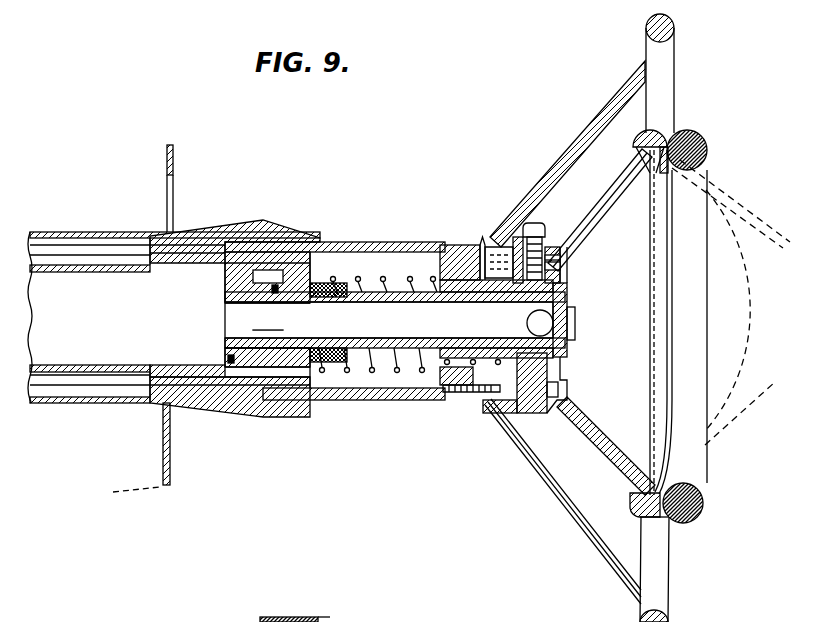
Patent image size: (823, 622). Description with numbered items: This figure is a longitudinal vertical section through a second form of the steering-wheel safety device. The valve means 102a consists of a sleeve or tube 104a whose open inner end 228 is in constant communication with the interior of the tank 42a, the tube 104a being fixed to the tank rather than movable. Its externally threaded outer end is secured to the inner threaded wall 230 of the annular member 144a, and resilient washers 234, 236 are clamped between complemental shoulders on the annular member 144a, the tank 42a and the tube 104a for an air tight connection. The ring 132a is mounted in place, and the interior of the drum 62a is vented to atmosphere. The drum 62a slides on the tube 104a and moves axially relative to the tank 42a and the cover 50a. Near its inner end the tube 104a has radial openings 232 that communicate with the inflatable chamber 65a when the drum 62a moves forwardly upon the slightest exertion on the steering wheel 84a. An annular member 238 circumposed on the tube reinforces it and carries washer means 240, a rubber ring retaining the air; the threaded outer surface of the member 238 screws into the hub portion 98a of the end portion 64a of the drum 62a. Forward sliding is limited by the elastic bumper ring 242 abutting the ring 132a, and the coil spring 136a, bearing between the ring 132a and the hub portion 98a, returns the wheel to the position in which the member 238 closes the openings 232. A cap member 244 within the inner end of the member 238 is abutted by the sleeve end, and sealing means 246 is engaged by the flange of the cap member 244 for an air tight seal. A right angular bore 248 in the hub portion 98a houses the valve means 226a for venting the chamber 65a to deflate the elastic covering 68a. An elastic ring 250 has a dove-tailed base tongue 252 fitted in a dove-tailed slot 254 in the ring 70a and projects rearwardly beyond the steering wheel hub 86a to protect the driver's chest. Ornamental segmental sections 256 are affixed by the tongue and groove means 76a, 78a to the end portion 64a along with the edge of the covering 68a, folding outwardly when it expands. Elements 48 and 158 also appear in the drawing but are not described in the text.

The tank 42a is at (163, 267).
The open inner end 228 is at (237, 263).
The cover 50a is at (220, 414).
The drum 62a is at (384, 390).
The washer means 240 is at (445, 301).
The resilient washer 234 is at (273, 325).
The annular member 238 is at (389, 320).
The radial openings 232 is at (553, 323).
The cap member 244 is at (575, 336).
The annular member 144a is at (262, 268).
The ring 132a is at (318, 268).
The sleeve or tube 104a is at (347, 283).
The valve means 102a is at (370, 287).
The elastic bumper ring 242 is at (330, 366).
The inner threaded wall 230 is at (226, 349).
The resilient washer 236 is at (229, 361).
The coil spring 136a is at (432, 247).
The valve means 226a is at (547, 230).
The right angular bore 248 is at (565, 260).
The sealing means 246 is at (558, 280).
The end portion 64a is at (610, 198).
The hub portion 98a is at (562, 270).
The steering wheel 84a is at (676, 78).
The steering wheel hub 86a is at (670, 51).
The dove-tailed slot 254 is at (670, 130).
The dove-tailed base tongue 252 is at (674, 140).
The elastic ring 250 is at (706, 138).
The elastic covering 68a is at (650, 307).
The ornamental segmental sections 256 is at (672, 363).
The inflatable chamber 65a is at (633, 360).
The groove of tongue and groove means 78a is at (690, 481).
The tongue of tongue and groove means 76a is at (632, 500).
The ring 70a is at (660, 523).
The base 48 is at (282, 617).
The pad 158 is at (341, 614).